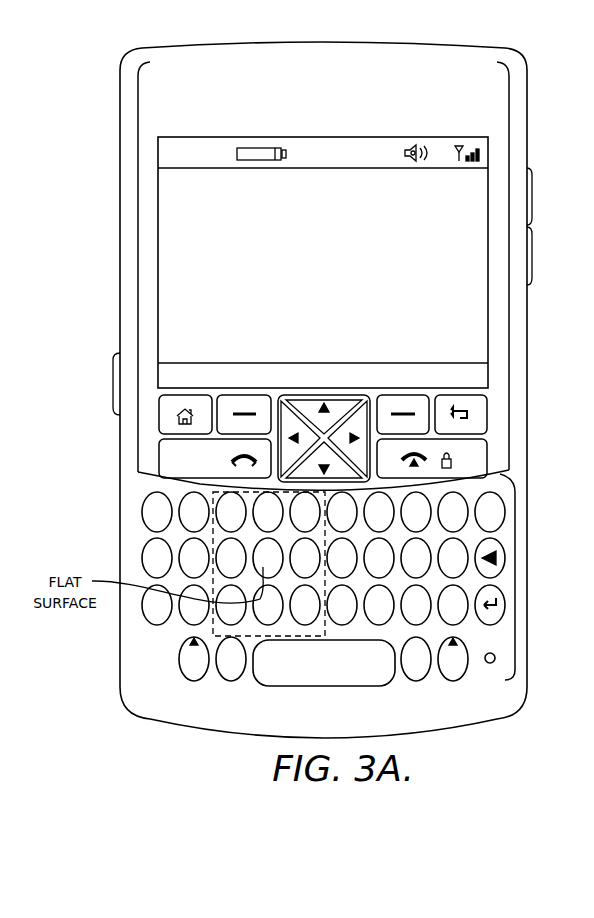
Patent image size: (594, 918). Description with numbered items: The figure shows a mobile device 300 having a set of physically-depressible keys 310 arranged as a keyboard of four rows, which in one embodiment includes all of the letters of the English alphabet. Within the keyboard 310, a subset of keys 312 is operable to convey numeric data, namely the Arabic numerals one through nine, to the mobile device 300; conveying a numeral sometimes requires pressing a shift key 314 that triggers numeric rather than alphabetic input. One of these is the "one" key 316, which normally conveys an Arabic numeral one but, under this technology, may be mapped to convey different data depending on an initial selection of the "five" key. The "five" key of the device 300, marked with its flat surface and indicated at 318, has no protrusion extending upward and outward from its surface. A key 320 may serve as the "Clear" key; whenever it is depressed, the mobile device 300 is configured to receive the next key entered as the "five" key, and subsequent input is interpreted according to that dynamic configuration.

The mobile device 300 is at (322, 390).
The set of physically-depressible keys 310 is at (516, 579).
The subset of keys 312 is at (213, 528).
The shift key 314 is at (193, 682).
The "1" key 316 is at (215, 484).
The home row key with flat surface 318 is at (283, 588).
The "Clear" key 320 is at (375, 410).